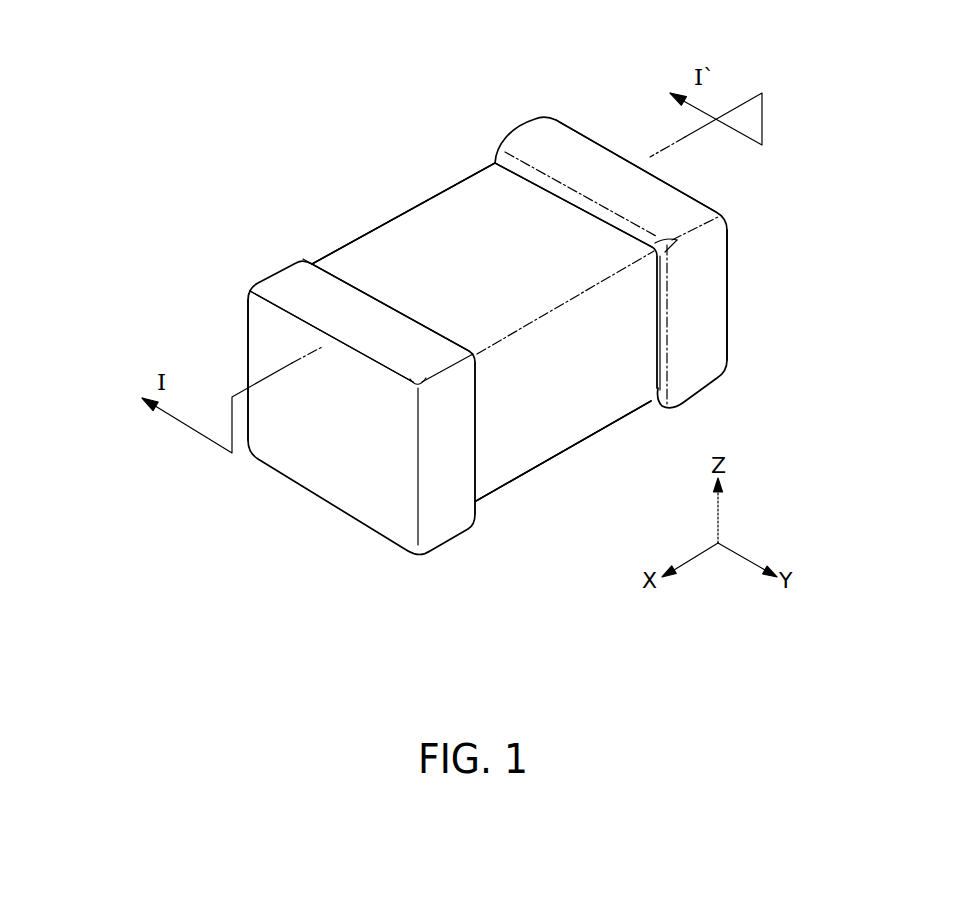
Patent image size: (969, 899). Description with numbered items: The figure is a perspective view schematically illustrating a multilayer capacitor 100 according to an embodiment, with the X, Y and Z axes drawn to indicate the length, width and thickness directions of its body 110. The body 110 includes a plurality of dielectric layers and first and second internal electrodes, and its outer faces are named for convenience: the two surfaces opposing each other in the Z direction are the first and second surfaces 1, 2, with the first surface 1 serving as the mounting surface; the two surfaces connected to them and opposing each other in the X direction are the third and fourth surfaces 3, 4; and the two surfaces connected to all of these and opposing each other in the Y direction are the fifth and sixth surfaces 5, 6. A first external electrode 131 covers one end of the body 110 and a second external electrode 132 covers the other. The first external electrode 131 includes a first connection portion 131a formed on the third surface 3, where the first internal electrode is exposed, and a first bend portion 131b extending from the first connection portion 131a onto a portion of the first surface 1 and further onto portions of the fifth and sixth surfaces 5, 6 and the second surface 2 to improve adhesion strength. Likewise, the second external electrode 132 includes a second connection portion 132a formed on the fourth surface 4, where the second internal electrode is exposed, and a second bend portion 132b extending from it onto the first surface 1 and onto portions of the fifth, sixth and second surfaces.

The multilayer capacitor 100 is at (358, 83).
The body 110 is at (413, 218).
The first surface 1 is at (505, 469).
The second surface 2 is at (467, 198).
The third surface 3 is at (324, 478).
The fourth surface 4 is at (718, 281).
The fifth surface 5 is at (583, 413).
The sixth surface 6 is at (371, 274).
The first external electrode 131 is at (302, 205).
The first connection portion 131a is at (255, 333).
The first bend portion 131b is at (285, 273).
The second external electrode 132 is at (613, 61).
The second connection portion 132a is at (603, 133).
The second bend portion 132b is at (533, 133).